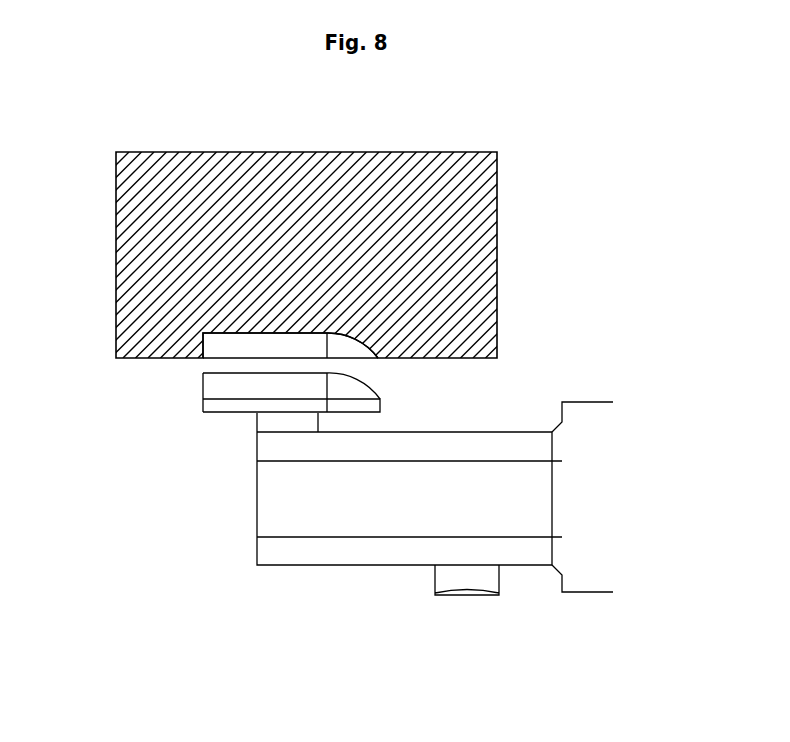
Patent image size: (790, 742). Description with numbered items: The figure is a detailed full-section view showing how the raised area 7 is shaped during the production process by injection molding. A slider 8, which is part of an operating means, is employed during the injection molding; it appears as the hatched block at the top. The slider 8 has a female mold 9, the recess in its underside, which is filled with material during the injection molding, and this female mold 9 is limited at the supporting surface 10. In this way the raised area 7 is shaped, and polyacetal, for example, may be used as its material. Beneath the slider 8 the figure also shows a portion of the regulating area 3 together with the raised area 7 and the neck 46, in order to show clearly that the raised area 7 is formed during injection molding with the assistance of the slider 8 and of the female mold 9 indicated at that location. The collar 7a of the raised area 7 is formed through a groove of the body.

The slider 8 is at (346, 277).
The supporting surface 10 is at (140, 360).
The female mold 9 is at (343, 350).
The regulating area 3 is at (432, 499).
The raised area 7 is at (225, 385).
The collar 7a is at (243, 407).
The neck 46 is at (458, 573).